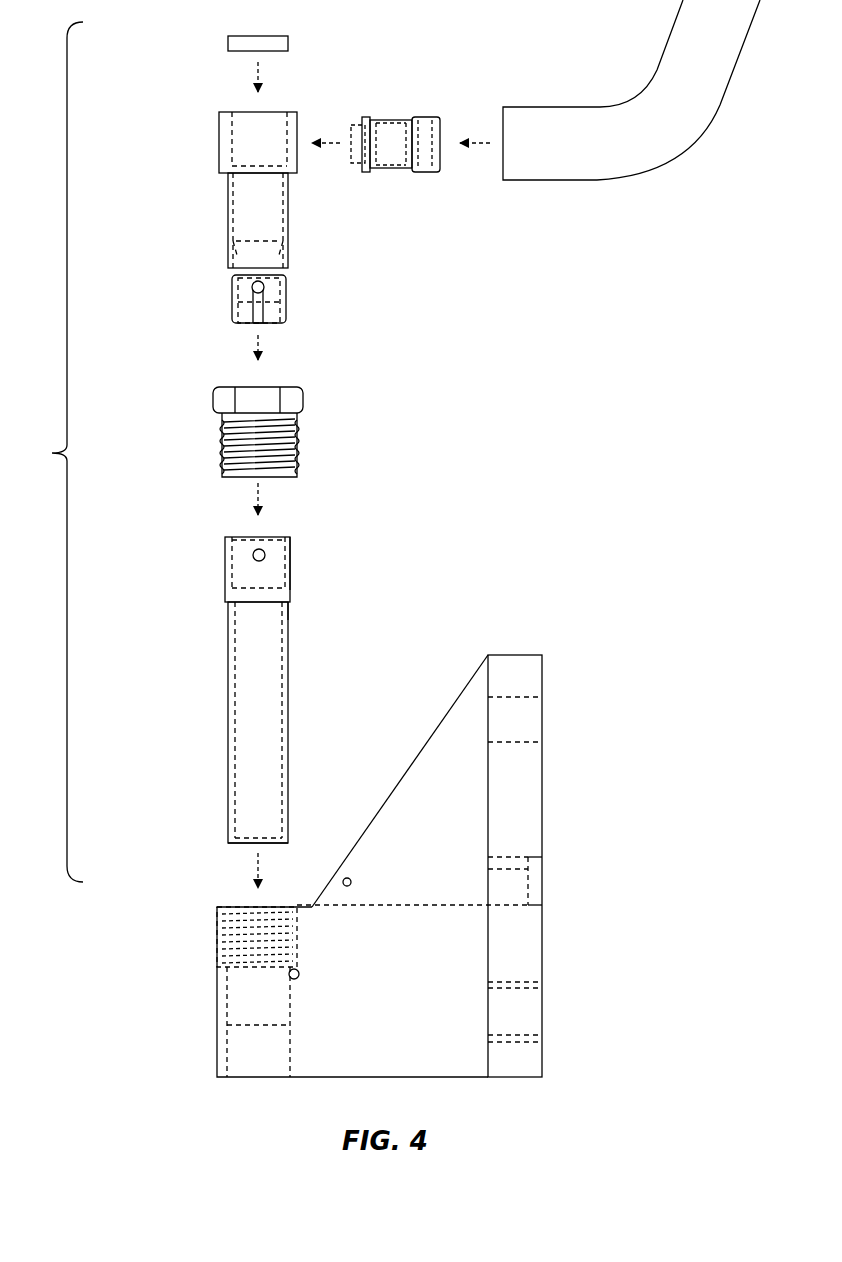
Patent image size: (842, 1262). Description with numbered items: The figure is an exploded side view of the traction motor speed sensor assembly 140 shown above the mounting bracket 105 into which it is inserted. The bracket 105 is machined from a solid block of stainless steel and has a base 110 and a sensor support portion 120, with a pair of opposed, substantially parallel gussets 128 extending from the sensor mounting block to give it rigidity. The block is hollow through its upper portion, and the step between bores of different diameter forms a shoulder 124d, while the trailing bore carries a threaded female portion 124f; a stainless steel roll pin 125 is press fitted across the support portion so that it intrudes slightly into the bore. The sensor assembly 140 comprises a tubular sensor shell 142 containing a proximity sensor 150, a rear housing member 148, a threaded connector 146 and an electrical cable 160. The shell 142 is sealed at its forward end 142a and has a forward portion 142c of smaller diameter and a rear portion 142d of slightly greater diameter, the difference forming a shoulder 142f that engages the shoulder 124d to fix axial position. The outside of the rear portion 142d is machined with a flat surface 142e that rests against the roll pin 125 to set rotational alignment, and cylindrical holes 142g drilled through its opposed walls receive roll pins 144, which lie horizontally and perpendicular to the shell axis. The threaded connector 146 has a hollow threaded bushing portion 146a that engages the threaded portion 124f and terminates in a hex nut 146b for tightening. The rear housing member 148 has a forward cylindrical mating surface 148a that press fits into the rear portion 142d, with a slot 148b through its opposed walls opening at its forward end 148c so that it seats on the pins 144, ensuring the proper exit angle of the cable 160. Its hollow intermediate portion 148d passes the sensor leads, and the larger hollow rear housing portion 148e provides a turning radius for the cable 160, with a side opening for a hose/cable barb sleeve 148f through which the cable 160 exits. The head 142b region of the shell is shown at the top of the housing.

The mounting bracket 105 is at (397, 861).
The base 110 is at (528, 673).
The sensor support portion 120 is at (372, 977).
The shoulder 124d is at (235, 1030).
The threaded female portion 124f is at (232, 945).
The roll pin 125 is at (296, 980).
The gussets 128 is at (413, 800).
The sensor assembly 140 is at (47, 452).
The sensor housing or shell 142 is at (248, 692).
The forward end 142a is at (245, 845).
The bolt head 142b is at (245, 537).
The forward portion 142c is at (228, 665).
The rear portion 142d is at (290, 583).
The flat surface 142e is at (290, 557).
The shoulder 142f is at (290, 602).
The cylindrical holes 142g is at (265, 555).
The roll pins 144 is at (258, 560).
The threaded connector 146 is at (201, 416).
The threaded male or bushing portion 146a is at (222, 455).
The hex nut 146b is at (255, 400).
The rear housing member 148 is at (238, 196).
The forward portion or cylindrical mating surface 148a is at (232, 292).
The slot 148b is at (258, 290).
The forward end 148c is at (285, 320).
The intermediate portion 148d is at (290, 215).
The rear housing portion 148e is at (219, 143).
The hose/cable barb sleeve 148f is at (392, 117).
The proximity sensor 150 is at (262, 725).
The electrical cable 160 is at (565, 165).